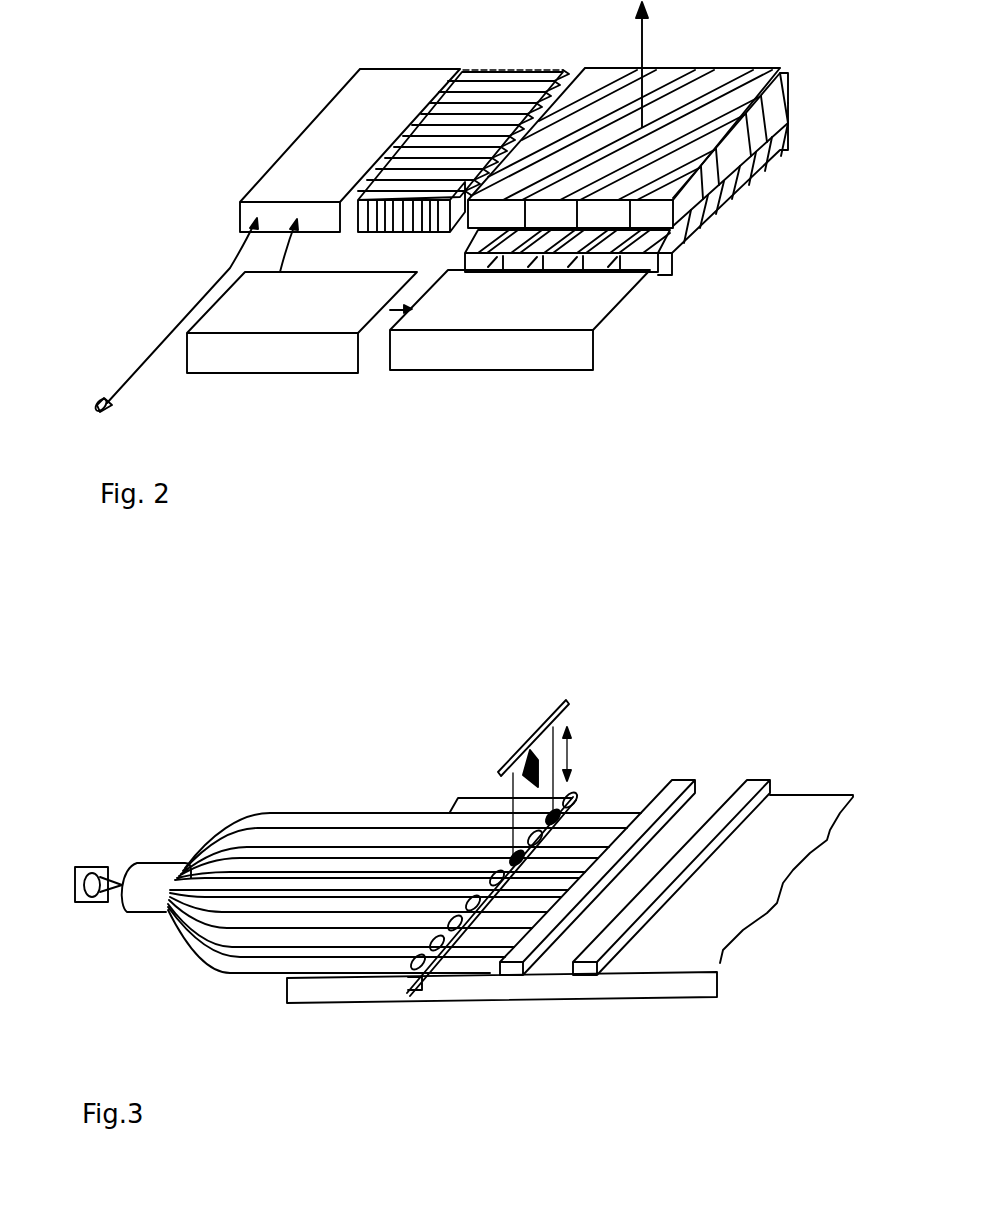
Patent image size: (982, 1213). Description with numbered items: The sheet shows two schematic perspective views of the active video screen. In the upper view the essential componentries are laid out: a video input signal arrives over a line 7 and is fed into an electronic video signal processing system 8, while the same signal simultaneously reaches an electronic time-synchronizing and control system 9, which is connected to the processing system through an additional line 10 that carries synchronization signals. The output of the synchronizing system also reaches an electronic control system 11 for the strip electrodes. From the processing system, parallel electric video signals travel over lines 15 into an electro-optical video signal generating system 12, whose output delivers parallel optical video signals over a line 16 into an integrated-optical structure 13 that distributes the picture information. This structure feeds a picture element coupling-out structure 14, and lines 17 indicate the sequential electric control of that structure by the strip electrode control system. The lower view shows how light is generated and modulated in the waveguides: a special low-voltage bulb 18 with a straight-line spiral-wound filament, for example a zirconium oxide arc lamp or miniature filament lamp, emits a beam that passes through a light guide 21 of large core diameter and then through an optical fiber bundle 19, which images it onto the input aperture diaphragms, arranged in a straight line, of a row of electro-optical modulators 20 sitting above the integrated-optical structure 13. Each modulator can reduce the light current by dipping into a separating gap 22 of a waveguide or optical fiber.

In FIG. 2, the line 7 is at (190, 322).
In FIG. 2, the electronic video signal processing system 8 is at (328, 135).
In FIG. 2, the electronic time-synchronizing and control system 9 is at (287, 360).
In FIG. 2, the additional line 10 is at (288, 250).
In FIG. 2, the electronic control system for the strip electrodes 11 is at (490, 352).
In FIG. 2, the electro-optical video signal generating system 12 is at (517, 68).
In FIG. 2, the integrated-optical structure 13 is at (680, 80).
In FIG. 3, the integrated-optical structure 13 is at (738, 784).
In FIG. 2, the picture element coupling-out structure 14 is at (720, 205).
In FIG. 2, the lines 15 is at (463, 70).
In FIG. 2, the line 16 is at (567, 77).
In FIG. 2, the lines 17 is at (640, 258).
In FIG. 3, the bulb 18 is at (90, 865).
In FIG. 3, the optical fiber bundle 19 is at (300, 820).
In FIG. 3, the electro-optical modulators 20 is at (560, 700).
In FIG. 3, the light guide 21 is at (157, 870).
In FIG. 3, the separating gap 22 is at (410, 992).